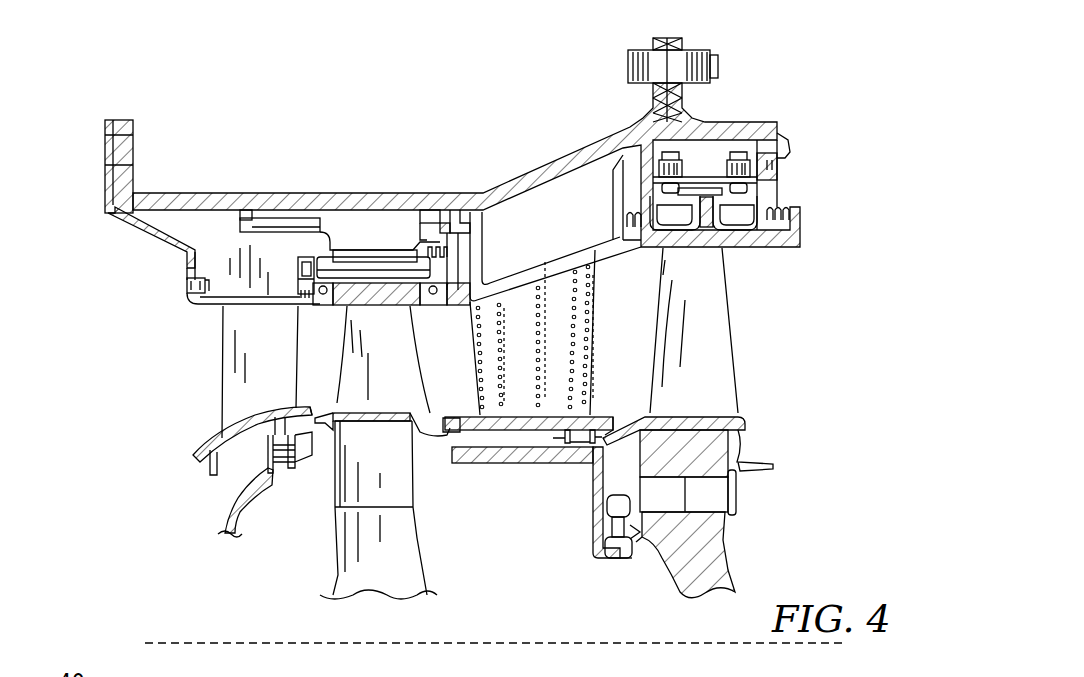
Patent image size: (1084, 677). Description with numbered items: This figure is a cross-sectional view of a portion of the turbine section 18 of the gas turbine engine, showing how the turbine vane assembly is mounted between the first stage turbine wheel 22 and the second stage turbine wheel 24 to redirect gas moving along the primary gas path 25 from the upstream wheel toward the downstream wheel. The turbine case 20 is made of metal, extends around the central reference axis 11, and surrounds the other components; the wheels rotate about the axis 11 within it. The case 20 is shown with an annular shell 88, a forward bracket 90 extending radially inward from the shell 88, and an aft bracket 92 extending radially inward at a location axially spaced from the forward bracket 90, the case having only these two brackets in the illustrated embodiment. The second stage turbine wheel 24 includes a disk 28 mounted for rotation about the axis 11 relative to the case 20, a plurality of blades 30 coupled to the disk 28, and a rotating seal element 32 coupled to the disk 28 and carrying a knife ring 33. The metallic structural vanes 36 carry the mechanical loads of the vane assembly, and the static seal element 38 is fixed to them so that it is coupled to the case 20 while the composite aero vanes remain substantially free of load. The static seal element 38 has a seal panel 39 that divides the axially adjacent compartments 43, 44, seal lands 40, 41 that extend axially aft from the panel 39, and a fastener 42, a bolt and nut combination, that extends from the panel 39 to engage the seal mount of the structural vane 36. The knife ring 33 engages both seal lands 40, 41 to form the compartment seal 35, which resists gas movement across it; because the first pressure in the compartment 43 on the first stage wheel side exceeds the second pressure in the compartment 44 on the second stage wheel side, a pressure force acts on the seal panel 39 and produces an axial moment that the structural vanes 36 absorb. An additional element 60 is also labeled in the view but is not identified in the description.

The central reference axis 11 is at (153, 643).
The turbine section 18 is at (110, 92).
The turbine case 20 is at (533, 150).
The turbine wheel 22 is at (328, 550).
The turbine wheel 24 is at (800, 488).
The primary gas path 25 is at (463, 374).
The disk 28 is at (730, 543).
The blades 30 is at (737, 337).
The rotating seal element 32 is at (636, 542).
The knife ring 33 is at (610, 553).
The compartment seal 35 is at (625, 578).
The structural vanes 36 is at (447, 328).
The static seal element 38 is at (505, 520).
The seal panel 39 is at (574, 483).
The seal land 40 is at (607, 502).
The seal land 41 is at (620, 565).
The fastener 42 is at (567, 447).
The compartment 43 is at (457, 475).
The compartment 44 is at (642, 467).
The rotational axis 60 is at (838, 675).
The annular shell 88 is at (572, 150).
The forward bracket 90 is at (453, 200).
The aft bracket 92 is at (628, 146).